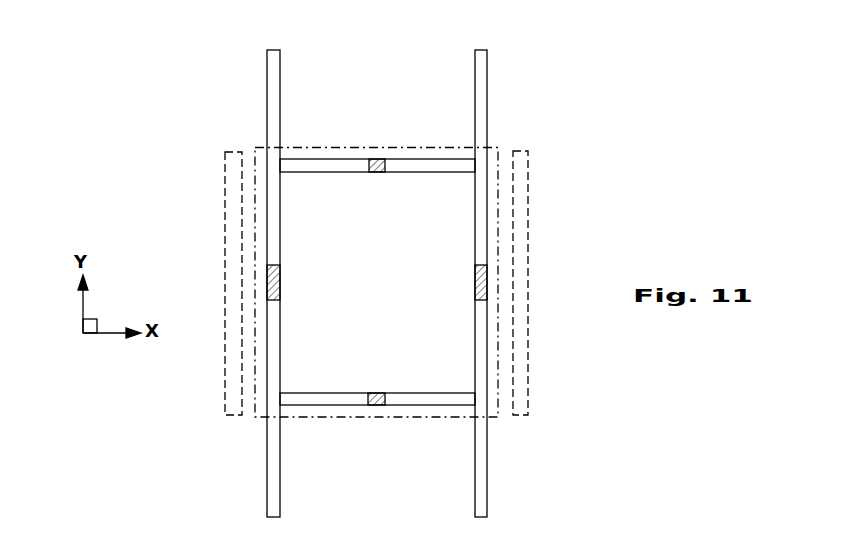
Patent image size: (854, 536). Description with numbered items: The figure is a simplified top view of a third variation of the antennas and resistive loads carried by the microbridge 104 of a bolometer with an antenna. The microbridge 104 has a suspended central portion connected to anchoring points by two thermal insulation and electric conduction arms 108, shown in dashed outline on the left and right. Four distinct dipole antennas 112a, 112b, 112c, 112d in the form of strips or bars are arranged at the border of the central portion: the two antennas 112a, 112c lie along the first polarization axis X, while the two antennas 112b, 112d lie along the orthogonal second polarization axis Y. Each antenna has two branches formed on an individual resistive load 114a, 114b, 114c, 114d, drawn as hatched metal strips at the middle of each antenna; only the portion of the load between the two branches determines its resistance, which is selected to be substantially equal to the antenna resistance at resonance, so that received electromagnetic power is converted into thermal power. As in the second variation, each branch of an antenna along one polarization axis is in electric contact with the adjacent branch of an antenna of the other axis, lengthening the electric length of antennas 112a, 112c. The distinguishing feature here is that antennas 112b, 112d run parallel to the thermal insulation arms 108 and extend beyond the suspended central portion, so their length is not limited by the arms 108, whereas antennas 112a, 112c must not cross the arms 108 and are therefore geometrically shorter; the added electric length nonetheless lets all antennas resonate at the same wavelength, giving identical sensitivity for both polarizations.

The microbridge 104 is at (495, 147).
The thermal insulation and electric conduction arms 108 is at (233, 172).
The dipole antenna 112a is at (338, 159).
The dipole antenna 112b is at (487, 79).
The dipole antenna 112c is at (338, 405).
The dipole antenna 112d is at (267, 85).
The individual resistive load 114a is at (375, 159).
The individual resistive load 114b is at (487, 283).
The individual resistive load 114c is at (375, 405).
The individual resistive load 114d is at (267, 285).